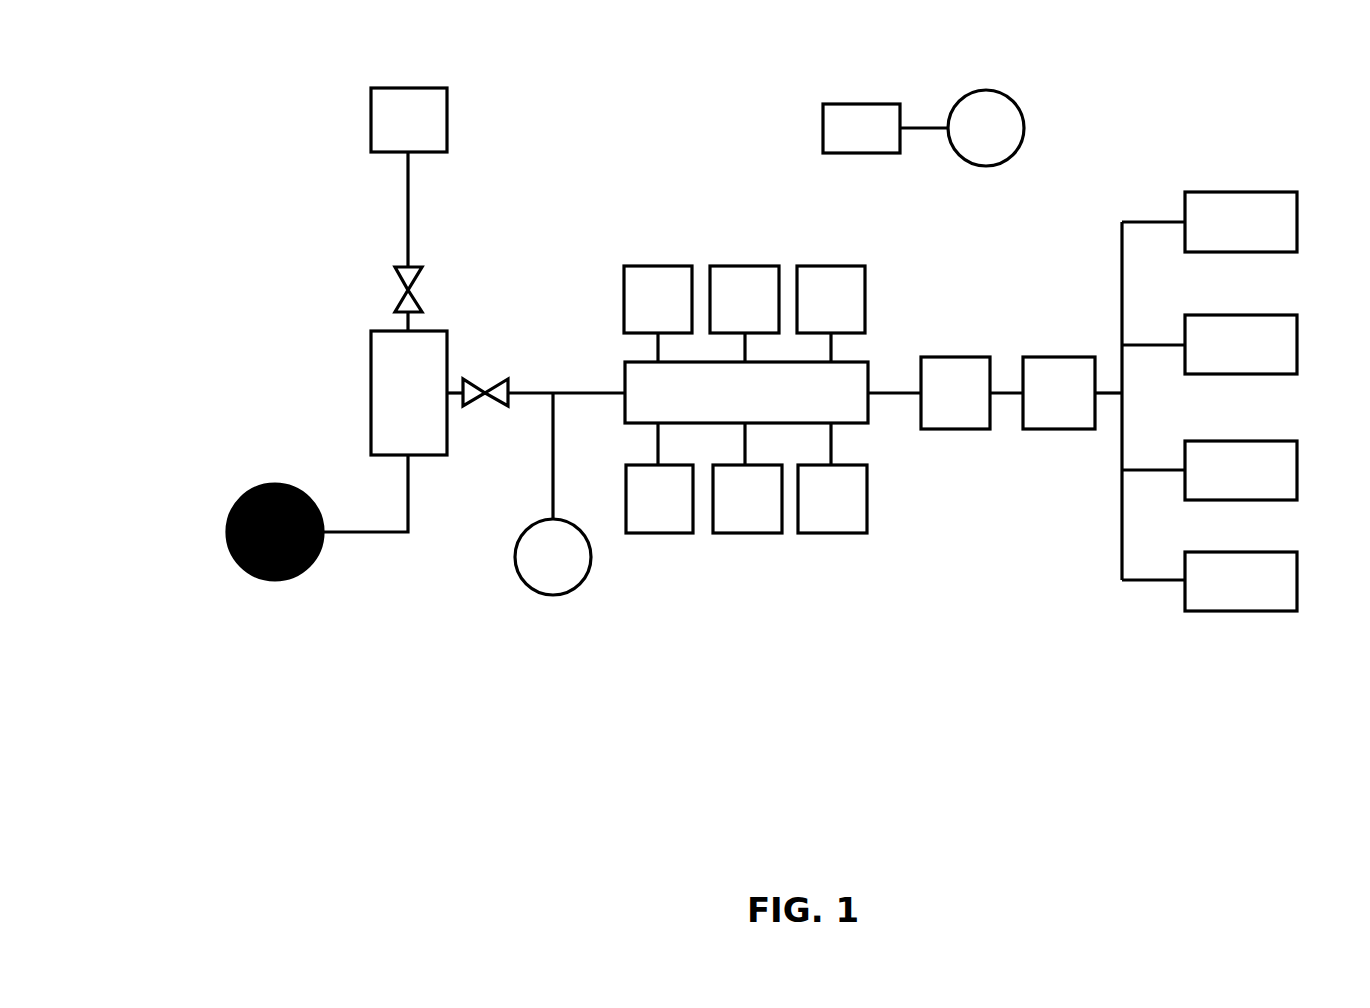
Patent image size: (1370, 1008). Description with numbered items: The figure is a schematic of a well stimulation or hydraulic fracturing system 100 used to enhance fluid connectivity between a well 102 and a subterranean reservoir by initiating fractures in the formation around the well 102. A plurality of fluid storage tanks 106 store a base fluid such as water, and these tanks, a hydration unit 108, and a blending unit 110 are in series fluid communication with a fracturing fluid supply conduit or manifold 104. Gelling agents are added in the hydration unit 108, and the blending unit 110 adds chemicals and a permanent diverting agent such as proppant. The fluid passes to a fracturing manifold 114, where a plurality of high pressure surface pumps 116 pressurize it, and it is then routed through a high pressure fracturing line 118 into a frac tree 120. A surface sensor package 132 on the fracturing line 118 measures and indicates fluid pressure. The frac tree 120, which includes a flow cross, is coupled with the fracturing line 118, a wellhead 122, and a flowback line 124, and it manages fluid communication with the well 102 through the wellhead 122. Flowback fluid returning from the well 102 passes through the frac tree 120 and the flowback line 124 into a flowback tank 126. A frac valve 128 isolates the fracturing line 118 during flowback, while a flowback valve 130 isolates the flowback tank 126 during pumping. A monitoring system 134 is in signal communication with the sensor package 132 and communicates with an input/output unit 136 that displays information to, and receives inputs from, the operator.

The well stimulation or hydraulic fracturing system 100 is at (334, 42).
The well 102 is at (266, 485).
The fracturing fluid supply conduit or manifold 104 is at (887, 389).
The fluid storage tanks 106 is at (1209, 401).
The hydration unit 108 is at (1059, 393).
The blending unit 110 is at (955, 393).
The fracturing manifold 114 is at (746, 392).
The high pressure surface pumps 116 is at (745, 399).
The high pressure fracturing line 118 is at (587, 388).
The frac tree 120 is at (409, 393).
The wellhead 122 is at (365, 534).
The flowback line 124 is at (407, 222).
The flowback tank 126 is at (409, 120).
The frac valve 128 is at (472, 400).
The flowback valve 130 is at (400, 272).
The surface sensor package 132 is at (553, 494).
The monitoring system 134 is at (861, 128).
The input/output unit 136 is at (986, 128).